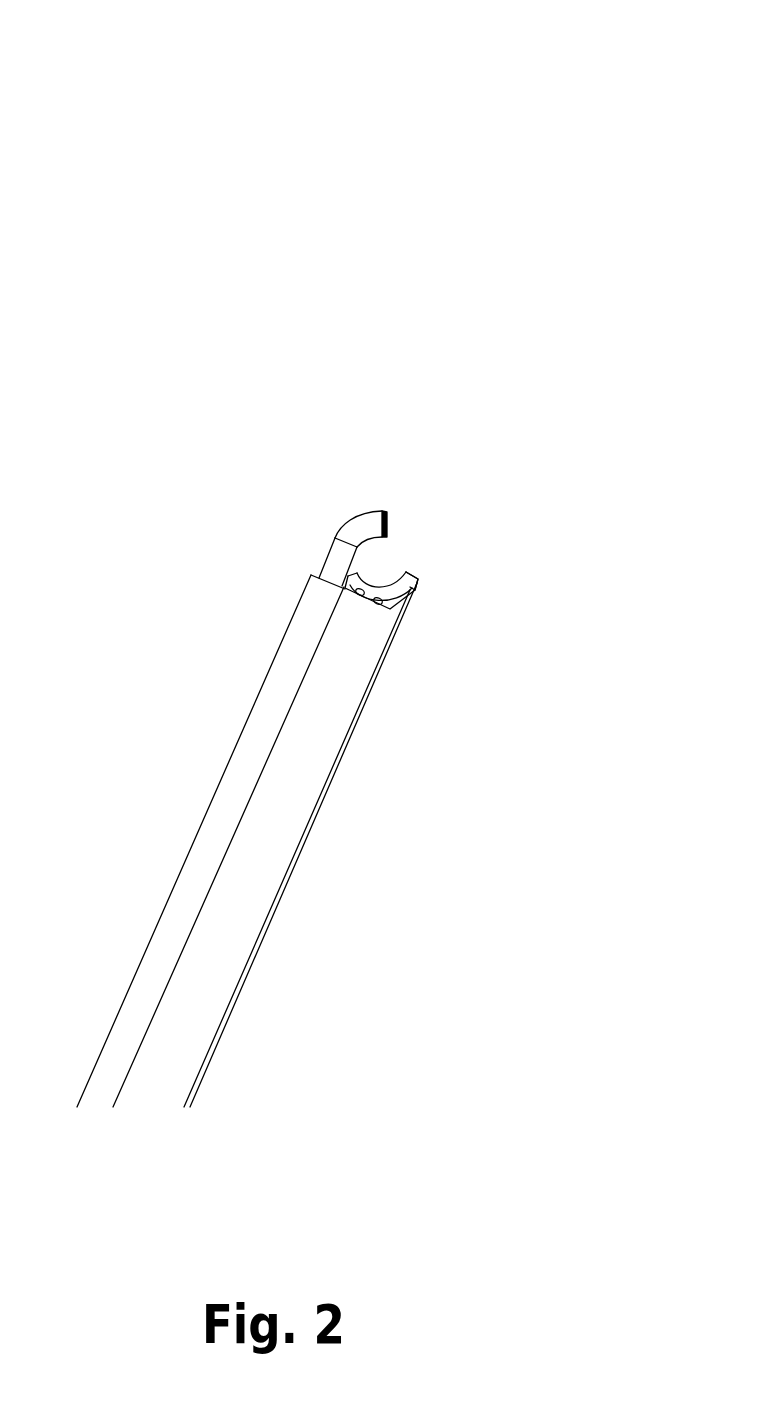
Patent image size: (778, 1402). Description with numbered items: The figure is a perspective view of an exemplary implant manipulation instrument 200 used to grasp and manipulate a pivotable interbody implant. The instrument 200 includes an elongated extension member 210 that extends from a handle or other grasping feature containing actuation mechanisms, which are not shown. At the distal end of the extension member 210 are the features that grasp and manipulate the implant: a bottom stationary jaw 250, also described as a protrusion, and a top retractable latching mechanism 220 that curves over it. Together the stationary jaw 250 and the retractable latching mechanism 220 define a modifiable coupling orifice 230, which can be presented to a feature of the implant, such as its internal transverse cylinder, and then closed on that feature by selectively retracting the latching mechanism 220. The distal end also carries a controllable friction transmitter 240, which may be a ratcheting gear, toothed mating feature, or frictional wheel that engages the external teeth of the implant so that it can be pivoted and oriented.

The implant manipulation instrument 200 is at (290, 135).
The extension member 210 is at (183, 870).
The top retractable latching mechanism 220 is at (360, 523).
The coupling orifice 230 is at (400, 548).
The controllable friction transmitter 240 is at (390, 602).
The bottom stationary jaw 250 is at (413, 586).